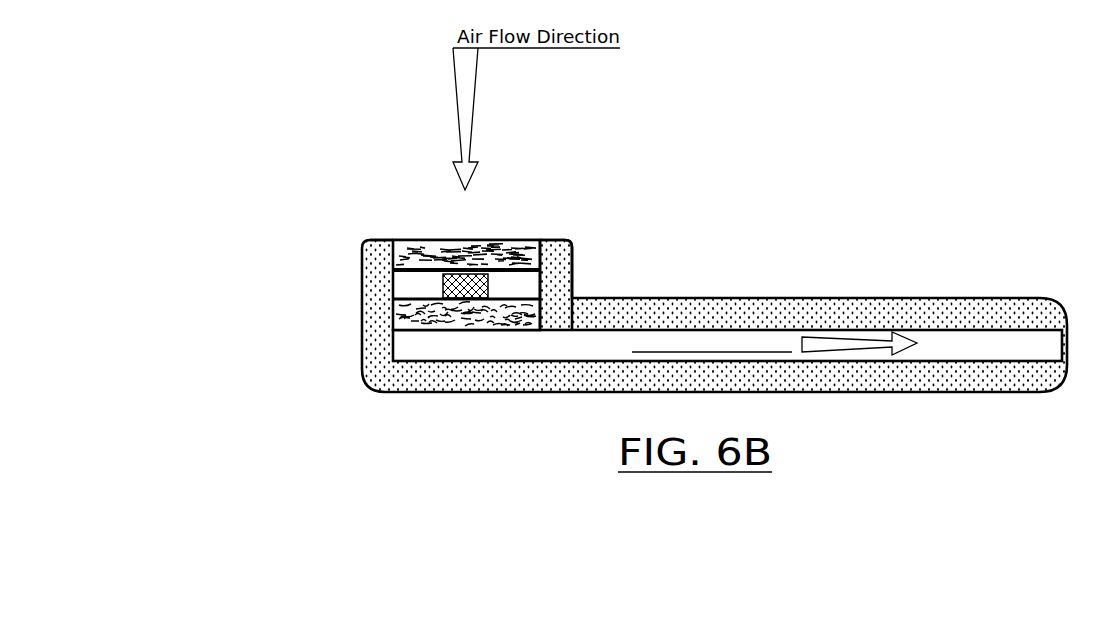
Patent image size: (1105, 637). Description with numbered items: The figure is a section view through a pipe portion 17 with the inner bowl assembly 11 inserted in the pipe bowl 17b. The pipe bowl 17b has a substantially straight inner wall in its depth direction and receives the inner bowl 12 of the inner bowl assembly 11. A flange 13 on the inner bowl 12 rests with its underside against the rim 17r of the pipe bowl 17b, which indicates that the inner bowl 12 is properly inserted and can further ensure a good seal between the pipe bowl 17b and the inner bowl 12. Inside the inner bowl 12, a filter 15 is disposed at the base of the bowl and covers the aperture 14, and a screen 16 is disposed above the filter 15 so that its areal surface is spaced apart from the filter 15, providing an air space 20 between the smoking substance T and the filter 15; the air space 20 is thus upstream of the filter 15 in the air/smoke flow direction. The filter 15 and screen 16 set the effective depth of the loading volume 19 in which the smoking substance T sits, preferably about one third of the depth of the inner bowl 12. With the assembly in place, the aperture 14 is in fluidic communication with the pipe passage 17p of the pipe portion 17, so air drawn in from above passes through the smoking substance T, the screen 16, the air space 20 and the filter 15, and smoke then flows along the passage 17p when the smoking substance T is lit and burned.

The inner bowl assembly 11 is at (648, 296).
The inner bowl 12 is at (541, 293).
The flange 13 is at (558, 239).
The aperture 14 is at (459, 314).
The filter 15 is at (393, 335).
The screen 16 is at (443, 288).
The pipe portion 17 is at (843, 297).
The pipe bowl 17b is at (393, 263).
The passage 17p is at (592, 348).
The rim 17r is at (373, 240).
The loading volume 19 is at (442, 248).
The air space 20 is at (526, 287).
The smoking substance T is at (516, 250).